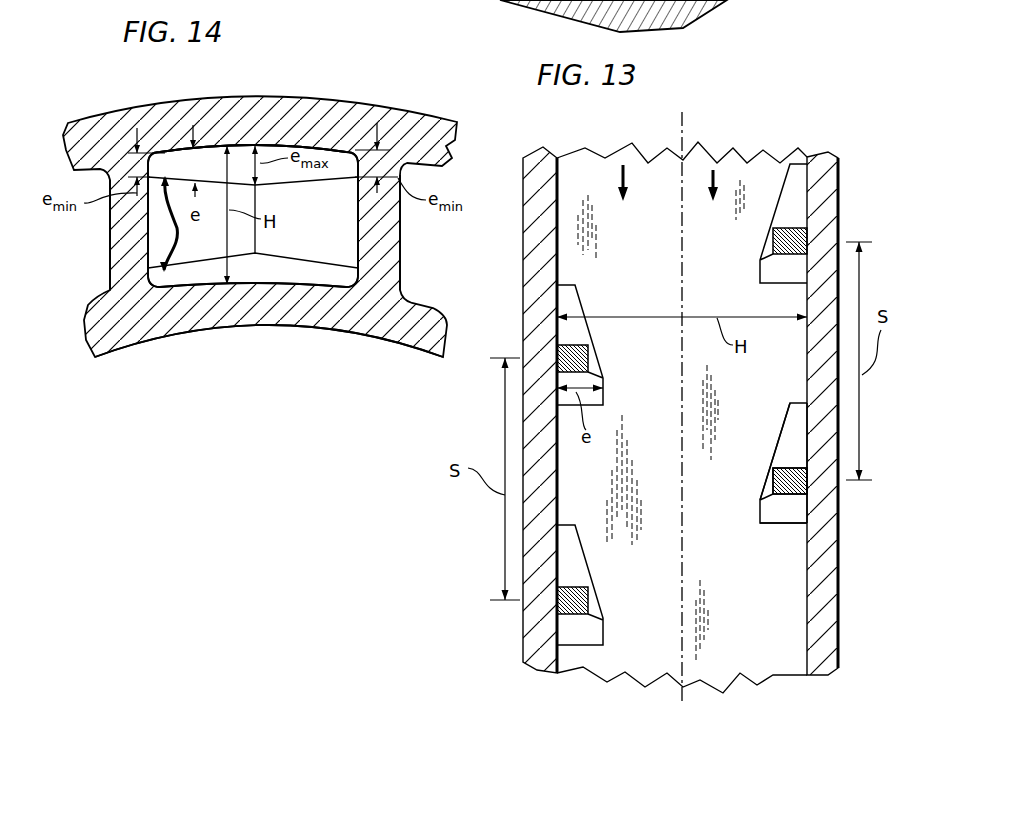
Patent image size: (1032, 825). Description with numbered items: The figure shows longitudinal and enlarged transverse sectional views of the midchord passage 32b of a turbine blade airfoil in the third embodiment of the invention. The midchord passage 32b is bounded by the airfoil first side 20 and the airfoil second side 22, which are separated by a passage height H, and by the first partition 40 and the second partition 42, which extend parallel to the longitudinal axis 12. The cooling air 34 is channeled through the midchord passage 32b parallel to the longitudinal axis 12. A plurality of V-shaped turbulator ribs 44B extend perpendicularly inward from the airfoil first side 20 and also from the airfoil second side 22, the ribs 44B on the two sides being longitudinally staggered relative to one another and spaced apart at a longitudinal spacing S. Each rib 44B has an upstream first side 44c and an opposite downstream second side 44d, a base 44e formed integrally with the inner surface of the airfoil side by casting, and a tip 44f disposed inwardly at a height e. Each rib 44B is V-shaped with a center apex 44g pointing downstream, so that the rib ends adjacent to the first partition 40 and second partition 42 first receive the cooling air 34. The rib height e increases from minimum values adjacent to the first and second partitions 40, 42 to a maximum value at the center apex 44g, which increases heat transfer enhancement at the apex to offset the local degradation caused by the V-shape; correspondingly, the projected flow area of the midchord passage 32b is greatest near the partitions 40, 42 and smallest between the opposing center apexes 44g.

In FIG. 13, the longitudinal axis 12 is at (683, 125).
In FIG. 14, the airfoil first side 20 is at (262, 97).
In FIG. 13, the airfoil first side 20 is at (838, 628).
In FIG. 14, the airfoil second side 22 is at (278, 327).
In FIG. 13, the airfoil second side 22 is at (523, 635).
In FIG. 14, the midchord passage 32b is at (353, 235).
In FIG. 13, the midchord passage 32b is at (762, 643).
In FIG. 13, the cooling air 34 is at (622, 173).
In FIG. 14, the first partition 40 is at (110, 240).
In FIG. 13, the first partition 40 is at (783, 665).
In FIG. 14, the second partition 42 is at (402, 258).
In FIG. 14, the V-shaped turbulator rib 44B is at (207, 224).
In FIG. 13, the V-shaped turbulator rib 44B is at (760, 256).
In FIG. 13, the rib upstream first side 44c is at (791, 468).
In FIG. 13, the rib downstream second side 44d is at (787, 523).
In FIG. 14, the rib base 44e is at (323, 148).
In FIG. 13, the rib base 44e is at (807, 512).
In FIG. 14, the rib tip 44f is at (289, 183).
In FIG. 13, the rib tip 44f is at (762, 503).
In FIG. 14, the rib center apex 44g is at (259, 253).